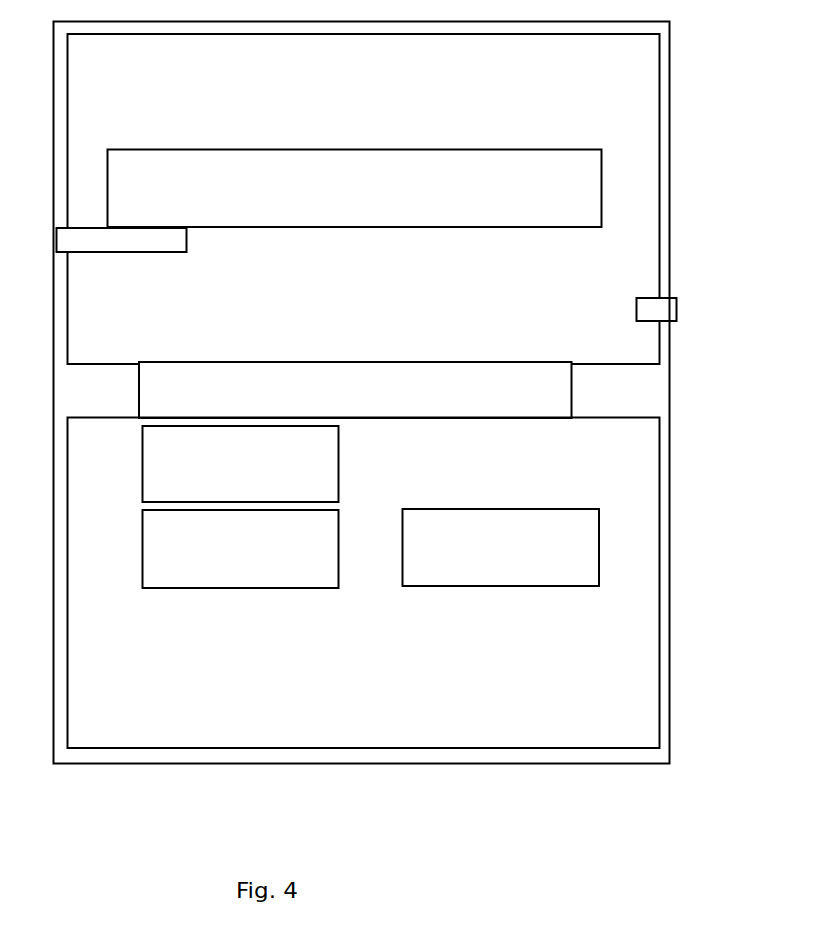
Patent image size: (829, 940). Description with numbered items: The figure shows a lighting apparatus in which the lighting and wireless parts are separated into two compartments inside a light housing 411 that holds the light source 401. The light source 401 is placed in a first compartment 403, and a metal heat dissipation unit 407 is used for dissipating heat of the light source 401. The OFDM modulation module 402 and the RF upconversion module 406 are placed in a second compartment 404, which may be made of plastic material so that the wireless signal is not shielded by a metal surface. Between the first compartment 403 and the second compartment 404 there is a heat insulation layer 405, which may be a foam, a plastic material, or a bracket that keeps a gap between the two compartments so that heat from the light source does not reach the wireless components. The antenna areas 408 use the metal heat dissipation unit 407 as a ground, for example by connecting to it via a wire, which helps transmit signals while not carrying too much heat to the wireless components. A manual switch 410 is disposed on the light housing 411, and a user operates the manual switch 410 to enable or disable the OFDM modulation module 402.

The light source 401 is at (545, 148).
The OFDM modulation module 402 is at (519, 587).
The first compartment 403 is at (653, 221).
The second compartment 404 is at (657, 605).
The heat insulation layer 405 is at (562, 390).
The RF upconversion module 406 is at (257, 588).
The metal heat dissipation unit 407 is at (157, 253).
The antenna areas 408 is at (338, 452).
The manual switch 410 is at (670, 322).
The light housing 411 is at (668, 158).